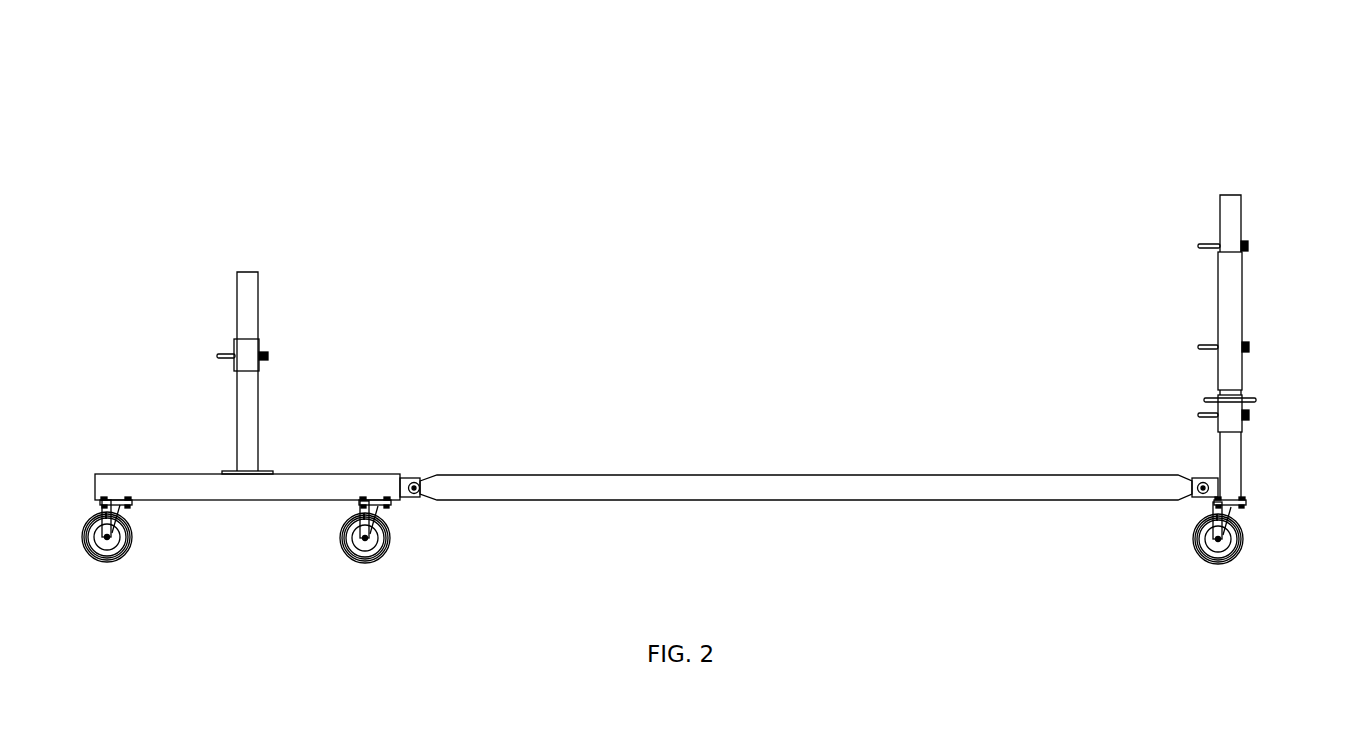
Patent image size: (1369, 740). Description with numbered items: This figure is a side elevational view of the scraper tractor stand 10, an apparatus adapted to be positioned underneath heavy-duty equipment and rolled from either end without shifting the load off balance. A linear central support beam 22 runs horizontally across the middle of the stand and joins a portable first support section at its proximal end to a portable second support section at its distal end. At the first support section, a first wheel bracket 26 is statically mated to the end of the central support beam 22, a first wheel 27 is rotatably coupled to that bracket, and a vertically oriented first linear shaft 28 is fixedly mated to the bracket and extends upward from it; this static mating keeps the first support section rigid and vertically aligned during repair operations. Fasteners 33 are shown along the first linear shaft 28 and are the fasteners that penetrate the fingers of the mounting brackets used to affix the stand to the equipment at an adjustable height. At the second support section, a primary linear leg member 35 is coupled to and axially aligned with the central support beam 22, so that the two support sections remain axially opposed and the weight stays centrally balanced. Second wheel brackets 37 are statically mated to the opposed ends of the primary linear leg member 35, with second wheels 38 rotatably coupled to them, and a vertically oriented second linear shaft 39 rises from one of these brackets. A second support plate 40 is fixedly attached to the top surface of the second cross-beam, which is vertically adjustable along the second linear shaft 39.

The scraper tractor stand 10 is at (695, 126).
The central support beam 22 is at (792, 490).
The first wheel bracket 26 is at (1246, 508).
The first wheel 27 is at (1226, 562).
The first linear shaft 28 is at (1235, 455).
The fastener 33 is at (227, 354).
The primary linear leg member 35 is at (248, 488).
The second wheel bracket 37 is at (131, 506).
The second wheel 38 is at (116, 560).
The second linear shaft 39 is at (247, 417).
The second support plate 40 is at (235, 471).